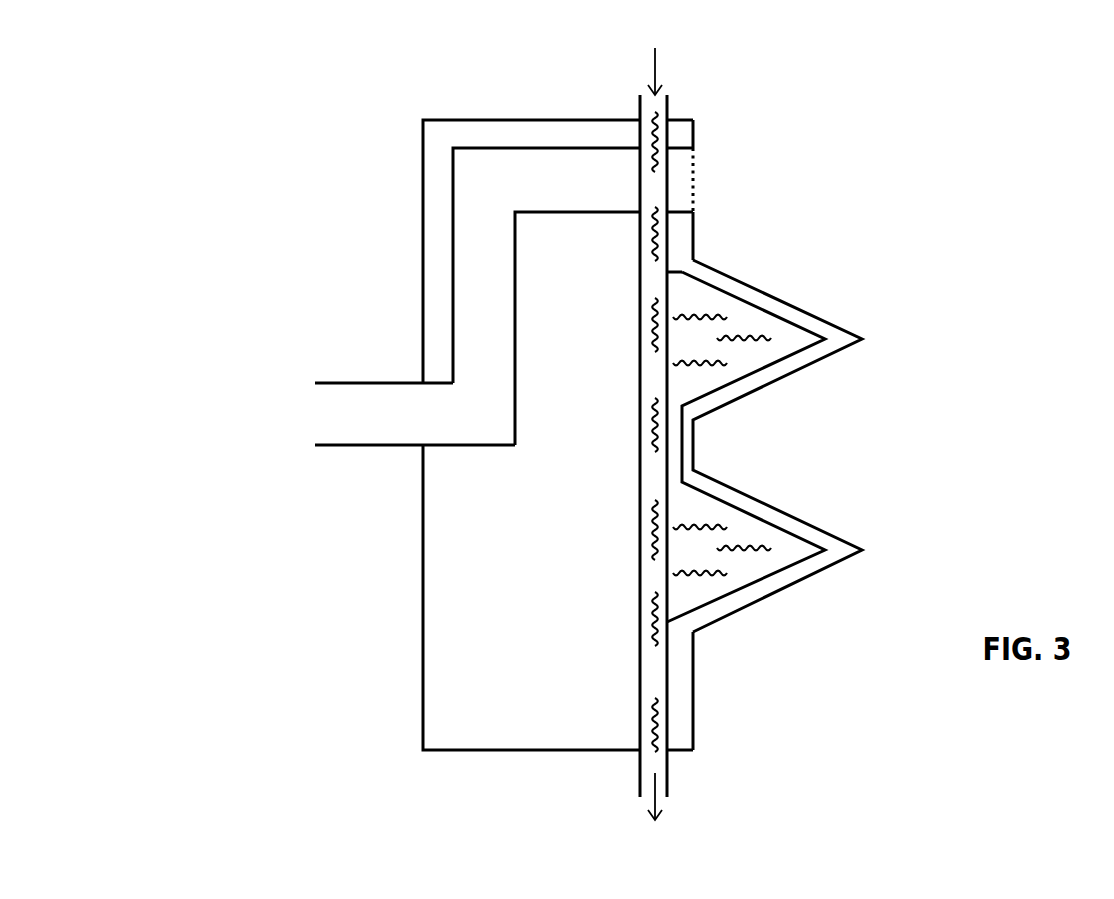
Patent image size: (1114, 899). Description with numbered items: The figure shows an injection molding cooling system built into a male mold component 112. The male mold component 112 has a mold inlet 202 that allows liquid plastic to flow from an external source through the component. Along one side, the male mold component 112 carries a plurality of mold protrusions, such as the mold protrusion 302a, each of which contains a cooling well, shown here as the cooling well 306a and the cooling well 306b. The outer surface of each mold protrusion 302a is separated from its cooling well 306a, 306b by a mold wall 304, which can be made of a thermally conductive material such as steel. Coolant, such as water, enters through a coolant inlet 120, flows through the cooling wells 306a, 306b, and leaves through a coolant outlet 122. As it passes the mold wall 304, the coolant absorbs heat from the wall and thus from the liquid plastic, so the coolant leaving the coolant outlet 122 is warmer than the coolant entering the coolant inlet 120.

The male mold component 112 is at (421, 119).
The coolant inlet 120 is at (671, 113).
The coolant outlet 122 is at (671, 734).
The mold inlet 202 is at (327, 417).
The mold protrusion 302a is at (866, 336).
The mold wall 304 is at (835, 435).
The cooling well 306a is at (692, 344).
The cooling well 306b is at (692, 552).